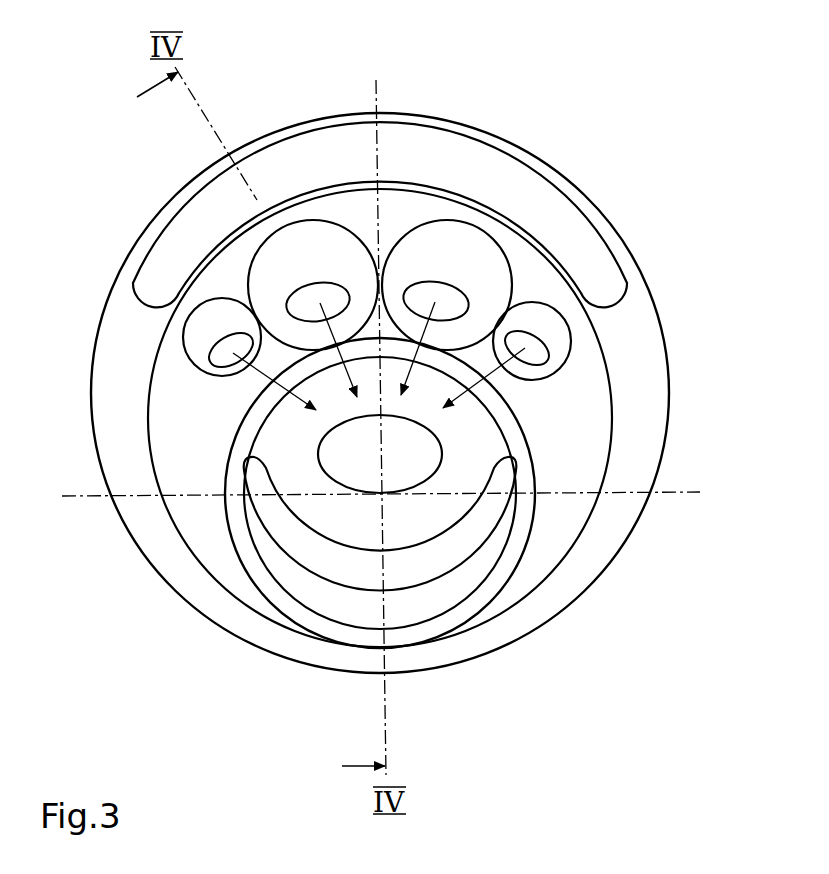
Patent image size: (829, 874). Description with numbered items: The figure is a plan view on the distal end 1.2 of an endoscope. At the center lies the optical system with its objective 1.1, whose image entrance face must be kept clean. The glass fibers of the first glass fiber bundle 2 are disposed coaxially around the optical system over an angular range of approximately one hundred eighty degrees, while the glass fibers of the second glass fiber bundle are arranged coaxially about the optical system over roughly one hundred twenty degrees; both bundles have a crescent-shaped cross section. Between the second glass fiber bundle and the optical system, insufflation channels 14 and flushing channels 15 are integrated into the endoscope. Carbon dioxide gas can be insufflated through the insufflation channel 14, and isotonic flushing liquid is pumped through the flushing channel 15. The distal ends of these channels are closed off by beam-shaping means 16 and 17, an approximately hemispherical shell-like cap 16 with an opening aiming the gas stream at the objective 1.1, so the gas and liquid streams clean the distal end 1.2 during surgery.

The objective 1.1 is at (443, 475).
The distal end 1.2 is at (570, 442).
The first glass fiber bundle 2 is at (432, 583).
The insufflation channel 14 is at (344, 218).
The flushing channel 15 is at (203, 300).
The beam-shaping cap 16 is at (313, 253).
The beam-shaping means 17 is at (203, 333).